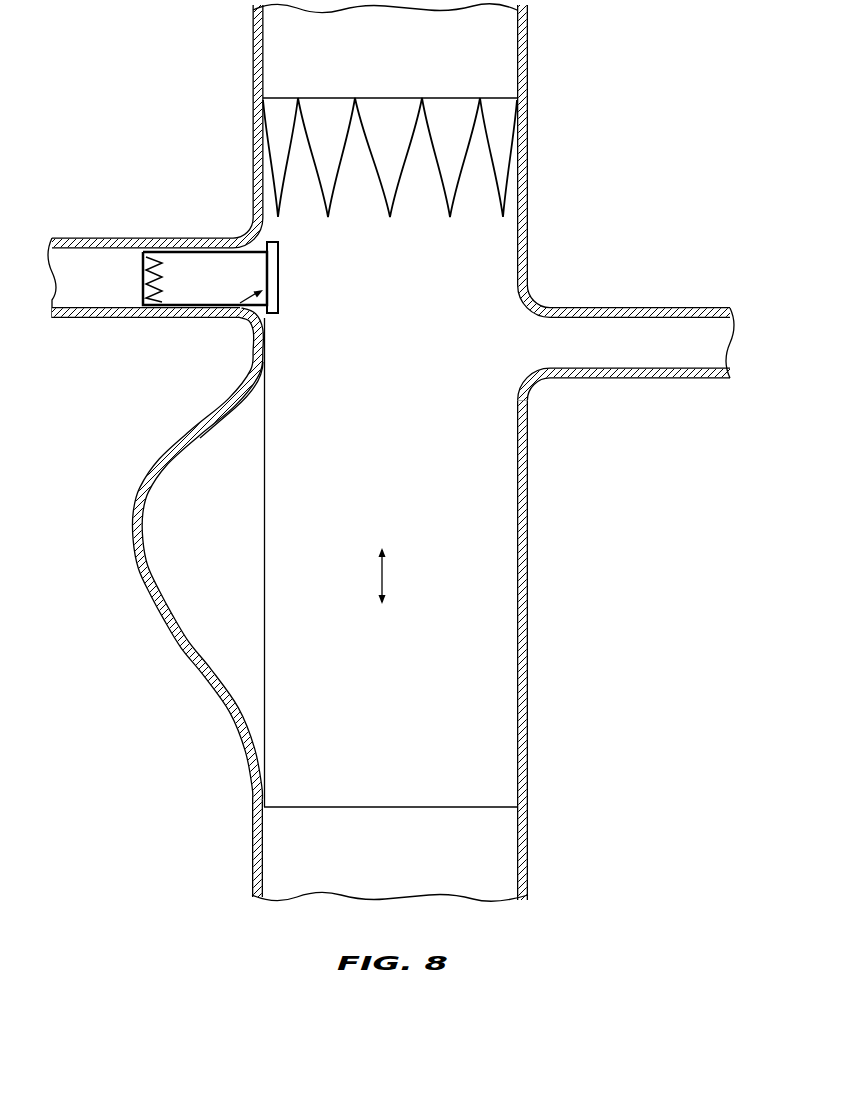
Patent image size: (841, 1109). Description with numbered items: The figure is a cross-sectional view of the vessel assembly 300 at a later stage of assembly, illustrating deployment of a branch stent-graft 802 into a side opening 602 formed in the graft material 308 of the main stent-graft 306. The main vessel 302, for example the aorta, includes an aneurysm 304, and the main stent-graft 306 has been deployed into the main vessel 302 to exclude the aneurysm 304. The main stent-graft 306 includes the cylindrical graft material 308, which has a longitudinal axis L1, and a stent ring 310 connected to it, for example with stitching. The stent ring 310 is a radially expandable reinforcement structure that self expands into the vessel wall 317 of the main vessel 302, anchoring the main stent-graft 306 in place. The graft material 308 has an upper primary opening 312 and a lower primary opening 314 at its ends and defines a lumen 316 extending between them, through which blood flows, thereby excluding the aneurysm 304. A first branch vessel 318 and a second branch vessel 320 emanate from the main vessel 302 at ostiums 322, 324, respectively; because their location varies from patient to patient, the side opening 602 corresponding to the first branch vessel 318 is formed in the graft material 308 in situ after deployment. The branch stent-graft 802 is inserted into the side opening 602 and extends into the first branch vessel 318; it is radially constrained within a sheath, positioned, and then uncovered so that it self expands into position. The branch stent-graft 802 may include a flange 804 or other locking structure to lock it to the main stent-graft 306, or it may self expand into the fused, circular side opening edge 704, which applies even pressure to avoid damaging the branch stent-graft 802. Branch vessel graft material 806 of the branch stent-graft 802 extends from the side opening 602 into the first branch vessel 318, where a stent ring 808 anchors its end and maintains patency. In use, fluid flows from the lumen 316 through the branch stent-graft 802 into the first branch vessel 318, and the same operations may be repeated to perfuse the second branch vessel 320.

The vessel assembly 300 is at (673, 143).
The main vessel 302 is at (395, 82).
The aneurysm 304 is at (207, 542).
The main stent-graft 306 is at (250, 455).
The graft material 308 is at (265, 430).
The stent ring 310 is at (295, 178).
The upper primary opening 312 is at (465, 92).
The lower primary opening 314 is at (356, 816).
The lumen 316 is at (451, 315).
The vessel wall 317 is at (528, 163).
The first branch vessel 318 is at (97, 258).
The second branch vessel 320 is at (673, 357).
The ostium 322 is at (262, 232).
The ostium 324 is at (540, 315).
The side opening 602 is at (240, 306).
The side opening edge 704 is at (273, 244).
The branch stent-graft 802 is at (225, 291).
The flange 804 is at (272, 270).
The branch vessel graft material 806 is at (165, 306).
The stent ring 808 is at (143, 283).
The longitudinal axis L1 is at (378, 580).